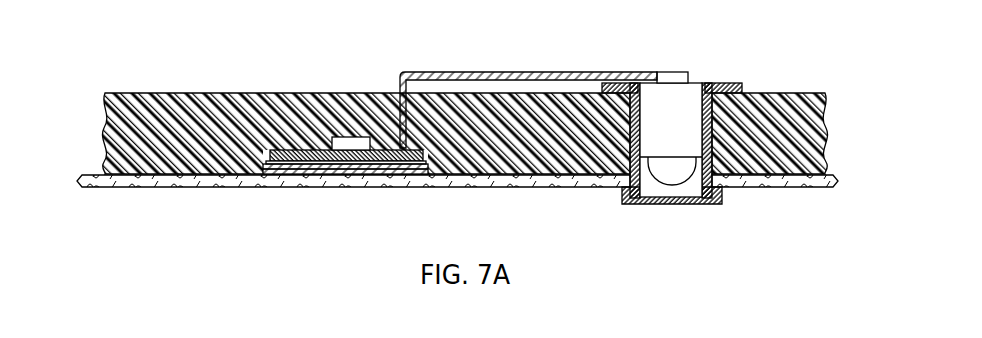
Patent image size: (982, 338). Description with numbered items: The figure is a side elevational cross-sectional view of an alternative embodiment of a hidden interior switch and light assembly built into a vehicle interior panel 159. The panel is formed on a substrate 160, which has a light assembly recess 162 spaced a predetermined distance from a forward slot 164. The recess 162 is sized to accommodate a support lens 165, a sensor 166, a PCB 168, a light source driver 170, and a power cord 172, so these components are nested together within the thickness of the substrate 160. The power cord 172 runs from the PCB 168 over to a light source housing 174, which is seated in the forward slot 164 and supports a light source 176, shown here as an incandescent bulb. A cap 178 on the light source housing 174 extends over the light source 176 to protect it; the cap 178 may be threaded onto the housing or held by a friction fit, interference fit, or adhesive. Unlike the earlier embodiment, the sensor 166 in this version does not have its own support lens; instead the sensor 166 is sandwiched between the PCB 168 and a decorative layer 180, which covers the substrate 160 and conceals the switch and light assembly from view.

The vehicle interior panel 159 is at (124, 44).
The substrate 160 is at (778, 92).
The light assembly recess 162 is at (284, 162).
The forward slot 164 is at (644, 122).
The support lens 165 is at (348, 163).
The sensor 166 is at (379, 170).
The PCB 168 is at (302, 157).
The light source driver 170 is at (353, 138).
The power cord 172 is at (493, 73).
The light source housing 174 is at (724, 84).
The light source 176 is at (662, 172).
The cap 178 is at (722, 200).
The decorative layer 180 is at (832, 175).